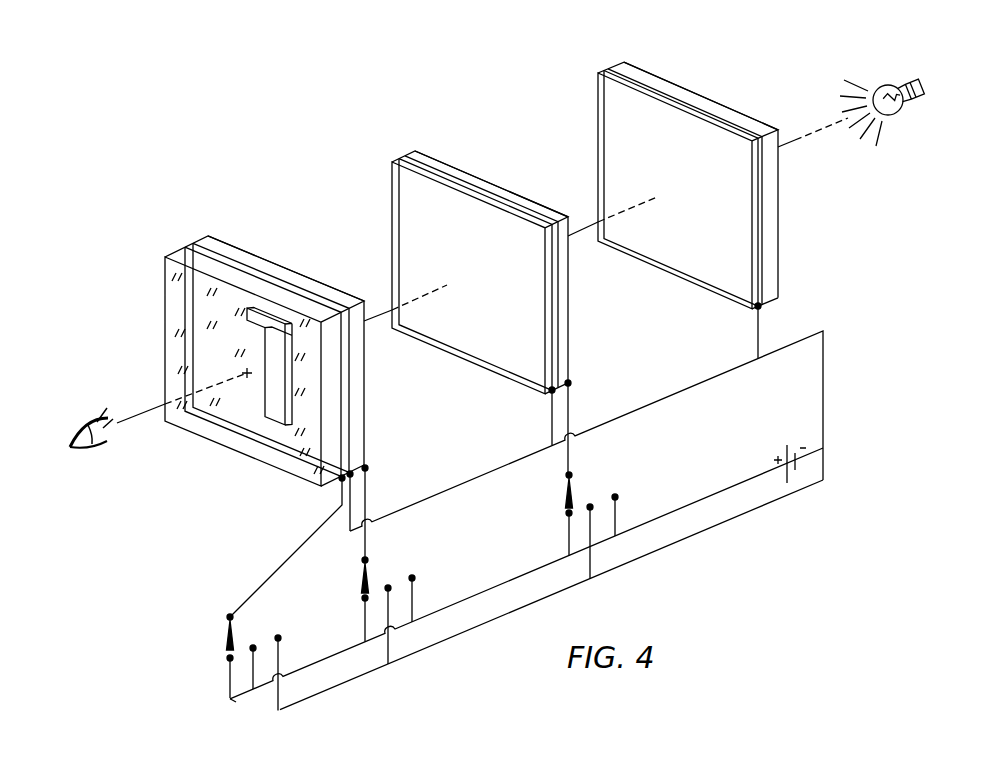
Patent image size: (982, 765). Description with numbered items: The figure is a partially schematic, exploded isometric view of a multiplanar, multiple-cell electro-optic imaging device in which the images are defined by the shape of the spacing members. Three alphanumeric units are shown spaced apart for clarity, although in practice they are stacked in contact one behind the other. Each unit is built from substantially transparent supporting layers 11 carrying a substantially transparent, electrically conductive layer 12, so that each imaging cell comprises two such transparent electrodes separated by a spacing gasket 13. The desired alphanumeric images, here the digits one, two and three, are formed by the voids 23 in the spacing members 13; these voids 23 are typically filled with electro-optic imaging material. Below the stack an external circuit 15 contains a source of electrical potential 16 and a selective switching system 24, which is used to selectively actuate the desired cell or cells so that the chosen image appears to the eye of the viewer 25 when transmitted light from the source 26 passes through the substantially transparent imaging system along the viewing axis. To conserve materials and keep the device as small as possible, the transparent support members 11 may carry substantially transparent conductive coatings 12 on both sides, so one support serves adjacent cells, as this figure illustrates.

The substantially transparent supporting layer 11 is at (165, 259).
The substantially transparent electrically conductive layer 12 is at (597, 53).
The spacing gasket 13 is at (283, 287).
The void 23 is at (270, 392).
The external circuit 15 is at (834, 397).
The source of electrical potential 16 is at (790, 446).
The selective switching system 24 is at (244, 632).
The eye of the viewer 25 is at (72, 440).
The light source 26 is at (928, 88).